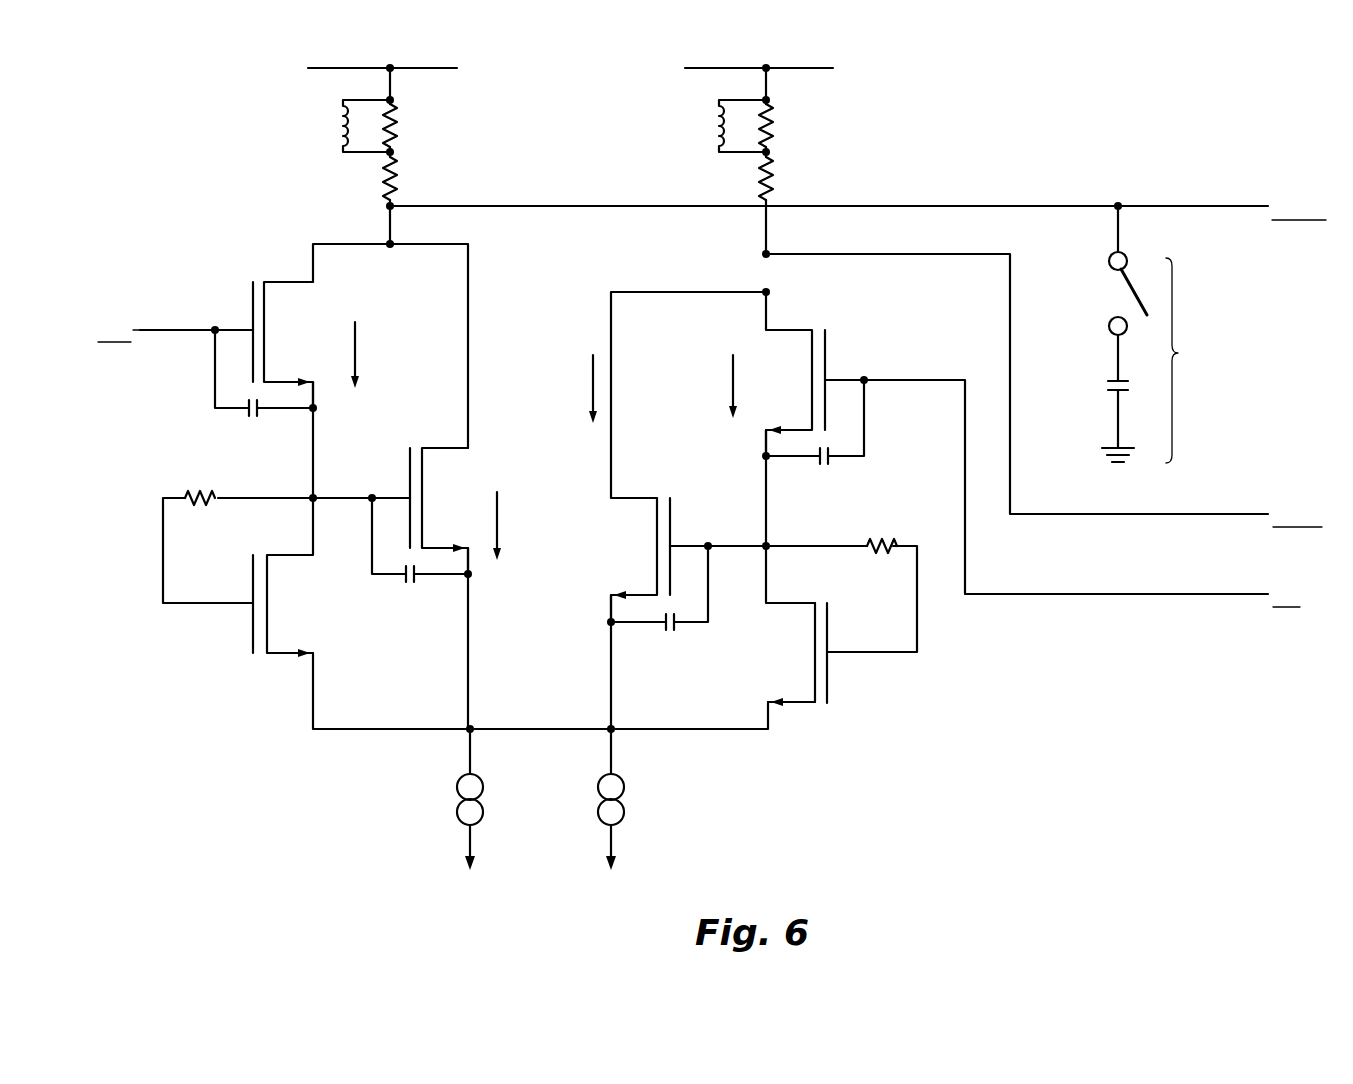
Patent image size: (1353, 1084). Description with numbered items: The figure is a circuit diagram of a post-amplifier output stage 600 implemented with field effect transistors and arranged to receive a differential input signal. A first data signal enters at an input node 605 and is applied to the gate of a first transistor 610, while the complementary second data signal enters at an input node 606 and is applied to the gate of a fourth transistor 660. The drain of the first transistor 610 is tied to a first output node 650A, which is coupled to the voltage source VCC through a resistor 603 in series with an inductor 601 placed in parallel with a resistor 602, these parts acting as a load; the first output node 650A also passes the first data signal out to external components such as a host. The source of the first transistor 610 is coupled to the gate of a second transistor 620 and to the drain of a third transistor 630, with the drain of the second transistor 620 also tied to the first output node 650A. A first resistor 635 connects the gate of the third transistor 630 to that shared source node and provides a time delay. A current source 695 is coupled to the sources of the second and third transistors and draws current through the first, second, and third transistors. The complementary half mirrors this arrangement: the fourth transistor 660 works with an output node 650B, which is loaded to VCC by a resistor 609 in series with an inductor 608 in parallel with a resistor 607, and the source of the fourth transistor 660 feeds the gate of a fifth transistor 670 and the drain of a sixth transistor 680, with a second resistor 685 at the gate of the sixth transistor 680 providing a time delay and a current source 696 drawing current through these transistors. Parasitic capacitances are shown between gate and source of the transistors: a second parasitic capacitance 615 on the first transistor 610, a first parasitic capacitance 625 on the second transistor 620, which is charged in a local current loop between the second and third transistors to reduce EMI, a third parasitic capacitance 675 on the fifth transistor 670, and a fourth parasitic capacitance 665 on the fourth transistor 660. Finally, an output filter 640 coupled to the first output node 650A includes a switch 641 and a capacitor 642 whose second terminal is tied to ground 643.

The post-amplifier output stage 600 is at (1062, 104).
The inductor 601 is at (343, 131).
The resistor 602 is at (398, 129).
The resistor 603 is at (398, 179).
The input node 605 is at (142, 328).
The input node 606 is at (1240, 594).
The resistor 607 is at (774, 129).
The inductor 608 is at (719, 131).
The resistor 609 is at (774, 179).
The first transistor 610 is at (240, 313).
The second parasitic capacitance 615 is at (238, 416).
The second transistor 620 is at (399, 478).
The first parasitic capacitance 625 is at (400, 580).
The third transistor 630 is at (238, 622).
The first resistor 635 is at (192, 492).
The output filter 640 is at (1132, 355).
The switch 641 is at (1102, 296).
The capacitor 642 is at (1106, 386).
The ground 643 is at (1120, 468).
The first output node 650A is at (1240, 206).
The output node 650B is at (1240, 514).
The fourth transistor 660 is at (842, 362).
The fourth parasitic capacitance 665 is at (832, 460).
The fifth transistor 670 is at (688, 528).
The third parasitic capacitance 675 is at (680, 630).
The sixth transistor 680 is at (846, 672).
The second resistor 685 is at (889, 540).
The current source 695 is at (484, 812).
The current source 696 is at (626, 812).